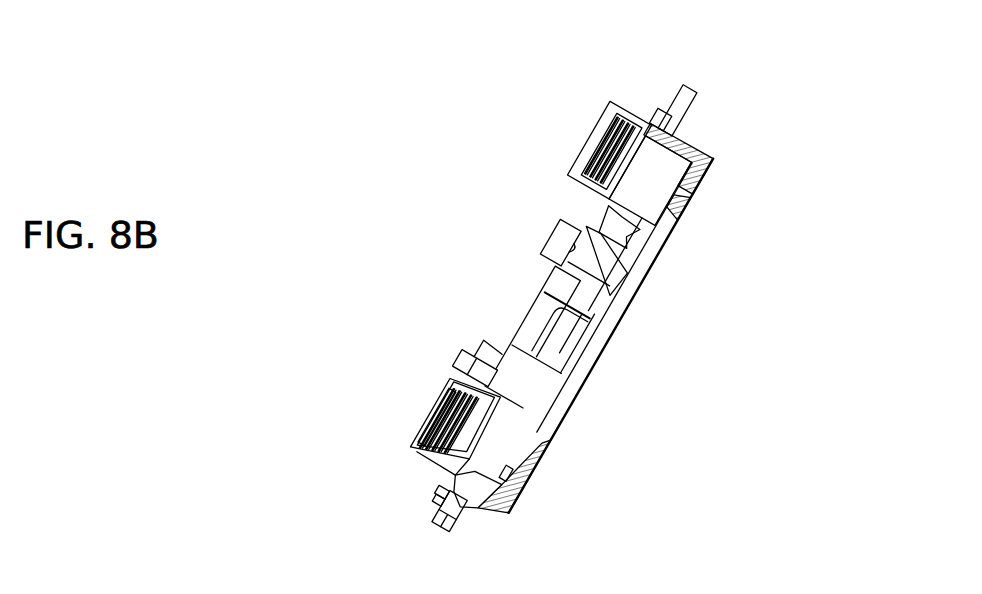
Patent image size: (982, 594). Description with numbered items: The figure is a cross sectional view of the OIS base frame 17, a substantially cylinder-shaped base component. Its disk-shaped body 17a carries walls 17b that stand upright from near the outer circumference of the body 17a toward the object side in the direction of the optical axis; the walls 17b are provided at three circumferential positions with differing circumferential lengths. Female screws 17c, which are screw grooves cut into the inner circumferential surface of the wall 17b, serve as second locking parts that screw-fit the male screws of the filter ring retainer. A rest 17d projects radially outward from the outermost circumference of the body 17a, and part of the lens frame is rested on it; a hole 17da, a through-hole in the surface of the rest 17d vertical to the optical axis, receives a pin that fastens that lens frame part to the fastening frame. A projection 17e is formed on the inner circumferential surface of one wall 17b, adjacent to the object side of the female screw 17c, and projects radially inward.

The OIS base frame 17 is at (536, 87).
The body 17a is at (659, 118).
The wall 17b is at (602, 140).
The female screw 17c is at (574, 170).
The rest 17d is at (434, 524).
The hole 17da is at (436, 506).
The projection 17e is at (445, 408).